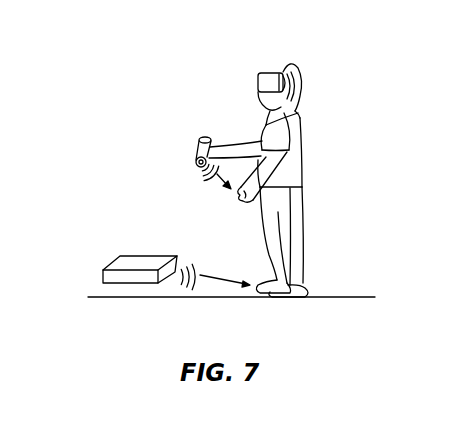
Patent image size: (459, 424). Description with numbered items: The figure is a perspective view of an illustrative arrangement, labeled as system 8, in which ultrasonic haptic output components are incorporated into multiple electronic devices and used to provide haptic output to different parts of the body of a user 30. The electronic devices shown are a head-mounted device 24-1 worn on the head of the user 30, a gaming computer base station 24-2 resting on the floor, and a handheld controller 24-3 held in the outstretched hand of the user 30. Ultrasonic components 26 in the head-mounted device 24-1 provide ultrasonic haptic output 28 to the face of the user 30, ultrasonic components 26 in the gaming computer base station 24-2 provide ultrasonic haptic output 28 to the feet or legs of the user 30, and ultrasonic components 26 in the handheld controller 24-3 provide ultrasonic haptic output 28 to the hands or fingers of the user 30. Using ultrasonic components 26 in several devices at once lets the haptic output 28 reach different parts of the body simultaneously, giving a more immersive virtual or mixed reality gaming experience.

The system 8 is at (197, 68).
The head-mounted device 24-1 is at (290, 74).
The gaming computer base station 24-2 is at (102, 271).
The handheld controller 24-3 is at (196, 146).
The ultrasonic components 26 is at (294, 83).
The ultrasonic haptic output 28 is at (298, 108).
The user 30 is at (305, 160).